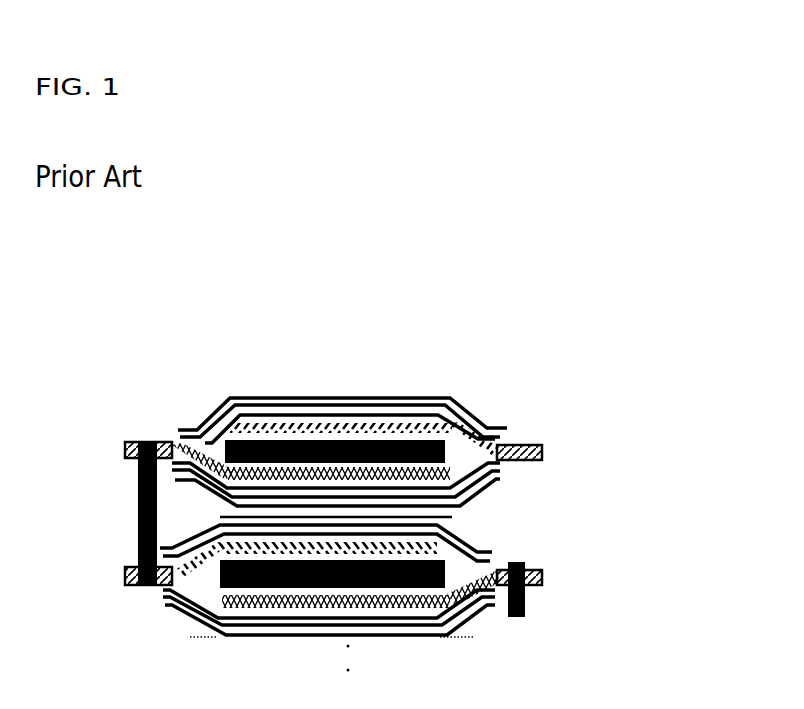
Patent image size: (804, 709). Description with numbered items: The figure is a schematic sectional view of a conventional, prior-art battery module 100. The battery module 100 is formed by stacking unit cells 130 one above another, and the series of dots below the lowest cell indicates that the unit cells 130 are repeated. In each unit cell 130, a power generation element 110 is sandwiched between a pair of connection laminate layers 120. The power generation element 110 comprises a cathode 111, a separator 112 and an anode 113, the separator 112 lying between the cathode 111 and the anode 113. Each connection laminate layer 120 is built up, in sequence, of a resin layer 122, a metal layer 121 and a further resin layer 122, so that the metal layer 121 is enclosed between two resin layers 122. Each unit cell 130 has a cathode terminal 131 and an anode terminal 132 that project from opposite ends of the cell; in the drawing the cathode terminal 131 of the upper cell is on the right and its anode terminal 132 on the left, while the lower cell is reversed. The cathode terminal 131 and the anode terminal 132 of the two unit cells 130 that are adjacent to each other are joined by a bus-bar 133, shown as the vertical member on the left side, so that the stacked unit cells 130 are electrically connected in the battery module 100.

The battery module 100 is at (133, 259).
The power generation element 110 is at (510, 353).
The cathode 111 is at (348, 420).
The separator 112 is at (424, 466).
The anode 113 is at (462, 410).
The connection laminate layer 120 is at (275, 348).
The metal layer 121 is at (191, 430).
The resin layer 122 is at (285, 392).
The unit cell 130 is at (600, 412).
The cathode terminal 131 is at (534, 440).
The anode terminal 132 is at (326, 522).
The bus-bar 133 is at (146, 488).